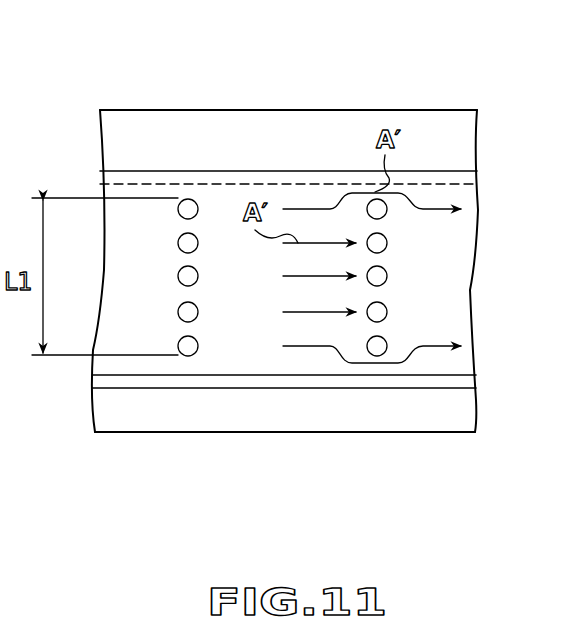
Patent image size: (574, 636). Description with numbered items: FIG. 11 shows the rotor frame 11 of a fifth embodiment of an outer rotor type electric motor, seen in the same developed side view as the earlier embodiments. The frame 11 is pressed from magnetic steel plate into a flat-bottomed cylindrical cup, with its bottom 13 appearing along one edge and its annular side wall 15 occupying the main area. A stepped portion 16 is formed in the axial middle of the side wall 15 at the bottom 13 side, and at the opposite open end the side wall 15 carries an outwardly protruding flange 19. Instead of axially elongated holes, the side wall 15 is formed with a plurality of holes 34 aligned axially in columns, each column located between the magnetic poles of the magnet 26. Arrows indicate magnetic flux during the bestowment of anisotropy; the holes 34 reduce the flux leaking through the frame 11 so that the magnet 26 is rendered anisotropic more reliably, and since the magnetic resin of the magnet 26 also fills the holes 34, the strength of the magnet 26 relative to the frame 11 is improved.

The frame 11 is at (456, 97).
The bottom 13 is at (272, 110).
The side wall 15 is at (458, 290).
The stepped portion 16 is at (478, 184).
The flange 19 is at (466, 382).
The magnet 26 is at (290, 435).
The holes 34 is at (197, 273).